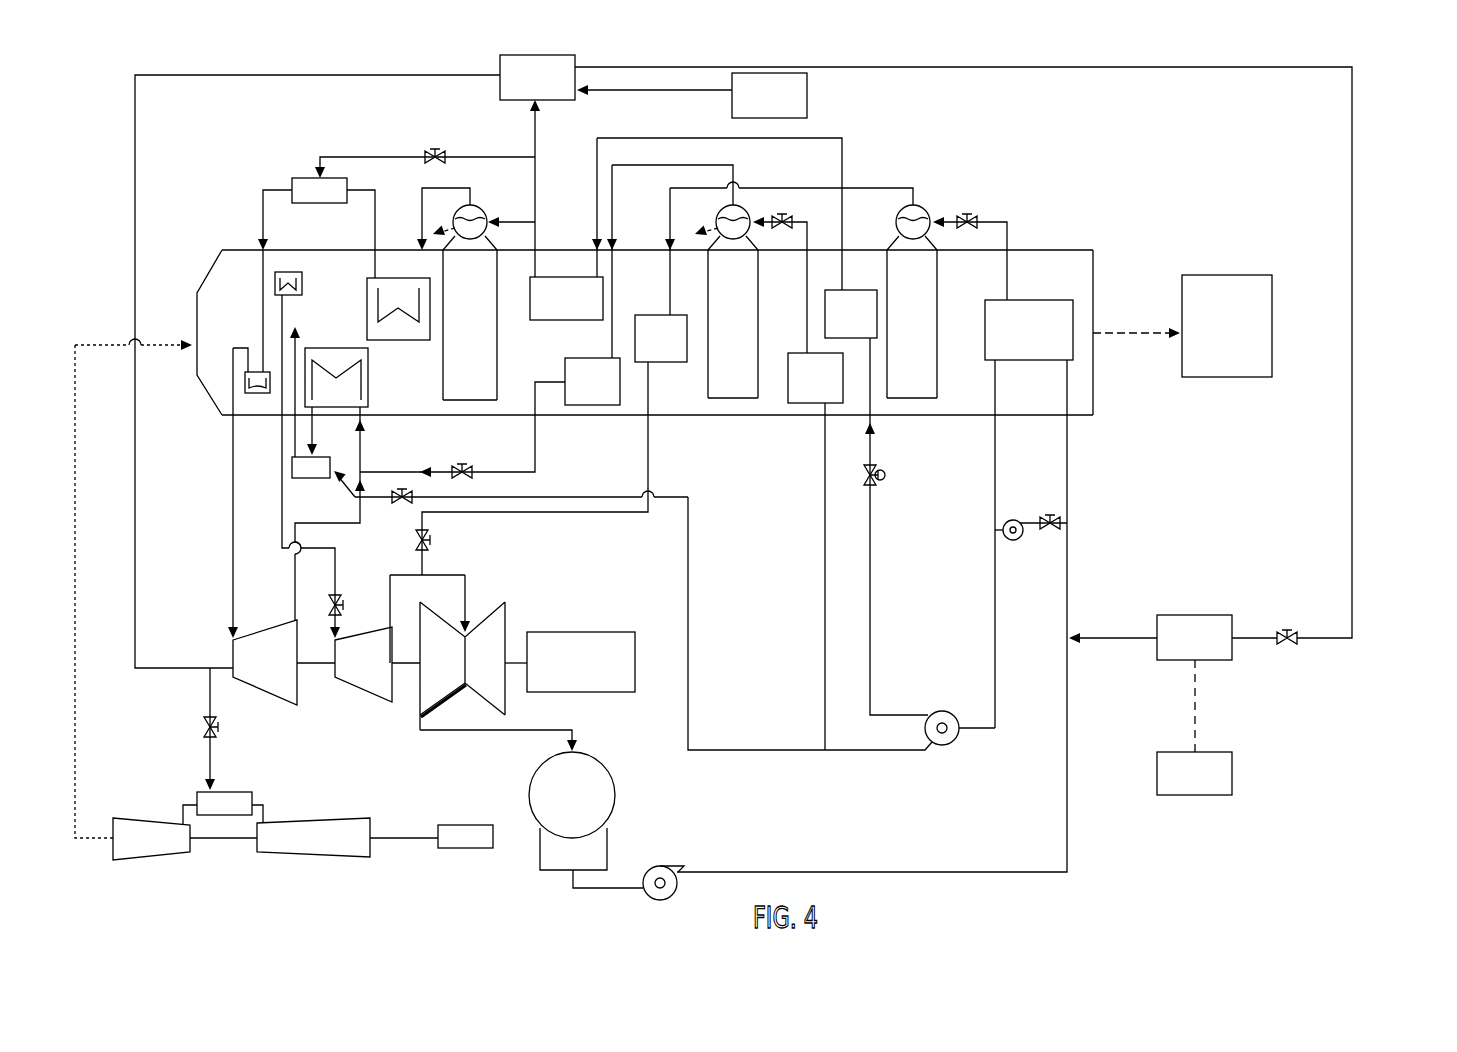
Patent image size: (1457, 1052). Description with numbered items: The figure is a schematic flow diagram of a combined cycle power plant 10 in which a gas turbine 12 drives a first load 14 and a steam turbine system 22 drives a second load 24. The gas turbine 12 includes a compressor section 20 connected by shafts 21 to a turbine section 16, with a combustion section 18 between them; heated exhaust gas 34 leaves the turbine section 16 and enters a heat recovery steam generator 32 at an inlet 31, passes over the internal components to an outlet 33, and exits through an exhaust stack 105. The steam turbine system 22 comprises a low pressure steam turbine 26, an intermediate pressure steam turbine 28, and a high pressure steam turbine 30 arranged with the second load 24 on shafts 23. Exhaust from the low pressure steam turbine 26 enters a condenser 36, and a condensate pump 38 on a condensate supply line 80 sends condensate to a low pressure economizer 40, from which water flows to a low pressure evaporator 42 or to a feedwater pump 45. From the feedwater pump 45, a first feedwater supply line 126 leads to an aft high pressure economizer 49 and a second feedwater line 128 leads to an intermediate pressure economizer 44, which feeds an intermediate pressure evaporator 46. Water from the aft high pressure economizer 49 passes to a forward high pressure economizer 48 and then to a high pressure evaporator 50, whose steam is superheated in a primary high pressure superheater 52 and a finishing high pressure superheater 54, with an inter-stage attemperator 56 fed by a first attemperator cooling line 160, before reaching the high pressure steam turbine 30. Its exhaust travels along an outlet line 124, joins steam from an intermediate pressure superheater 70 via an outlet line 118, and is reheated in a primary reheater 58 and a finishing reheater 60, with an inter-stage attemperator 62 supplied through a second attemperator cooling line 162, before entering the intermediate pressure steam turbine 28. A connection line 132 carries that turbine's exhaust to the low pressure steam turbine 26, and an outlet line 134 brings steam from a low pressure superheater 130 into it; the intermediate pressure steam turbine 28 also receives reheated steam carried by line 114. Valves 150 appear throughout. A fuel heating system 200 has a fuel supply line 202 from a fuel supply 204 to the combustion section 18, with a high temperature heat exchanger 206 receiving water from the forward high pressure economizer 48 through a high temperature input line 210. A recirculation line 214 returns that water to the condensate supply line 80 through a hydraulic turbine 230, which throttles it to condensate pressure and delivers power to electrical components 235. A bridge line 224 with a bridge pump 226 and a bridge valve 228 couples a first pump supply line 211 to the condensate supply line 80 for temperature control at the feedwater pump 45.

The combined cycle power plant 10 is at (1388, 68).
The gas turbine 12 is at (313, 784).
The first load 14 is at (475, 825).
The turbine section 16 is at (148, 815).
The combustion section 18 is at (220, 792).
The compressor section 20 is at (315, 818).
The shafts 21 is at (225, 840).
The steam turbine system 22 is at (405, 645).
The shafts 23 is at (512, 650).
The second load 24 is at (590, 632).
The low pressure steam turbine 26 is at (425, 690).
The intermediate pressure steam turbine 28 is at (358, 688).
The high pressure steam turbine 30 is at (262, 705).
The inlet 31 is at (197, 310).
The heat recovery steam generator 32 is at (1047, 250).
The outlet 33 is at (1095, 283).
The exhaust gas 34 is at (78, 750).
The condenser 36 is at (617, 800).
The condensate pump 38 is at (672, 898).
The low pressure economizer 40 is at (985, 305).
The low pressure evaporator 42 is at (938, 378).
The intermediate pressure economizer 44 is at (815, 378).
The feedwater pump 45 is at (949, 712).
The intermediate pressure evaporator 46 is at (758, 385).
The forward high pressure economizer 48 is at (686, 229).
The aft high pressure economizer 49 is at (851, 314).
The high pressure evaporator 50 is at (443, 388).
The primary high pressure superheater 52 is at (398, 278).
The finishing high pressure superheater 54 is at (255, 393).
The inter-stage attemperator 56 is at (318, 203).
The primary reheater 58 is at (312, 348).
The finishing reheater 60 is at (302, 276).
The inter-stage attemperator 62 is at (305, 480).
The intermediate pressure superheater 70 is at (649, 285).
The condensate supply line 80 is at (935, 874).
The exhaust stack 105 is at (1227, 326).
The reheat steam line 114 is at (335, 578).
The outlet line 118 is at (538, 442).
The outlet line 124 is at (290, 588).
The first feedwater supply line 126 is at (870, 620).
The second feedwater line 128 is at (825, 555).
The low pressure superheater 130 is at (774, 272).
The connection line 132 is at (445, 572).
The outlet line 134 is at (650, 472).
The valves 150 is at (465, 470).
The first attemperator cooling line 160 is at (311, 150).
The second attemperator cooling line 162 is at (688, 640).
The fuel heating system 200 is at (626, 38).
The fuel supply line 202 is at (385, 72).
The fuel supply 204 is at (769, 95).
The high temperature heat exchanger 206 is at (537, 77).
The high temperature input line 210 is at (535, 190).
The first pump supply line 211 is at (995, 468).
The recirculation line 214 is at (1352, 230).
The bridge line 224 is at (1003, 540).
The bridge pump 226 is at (1018, 520).
The bridge valve 228 is at (1057, 532).
The hydraulic turbine 230 is at (1173, 637).
The electrical components 235 is at (1194, 727).